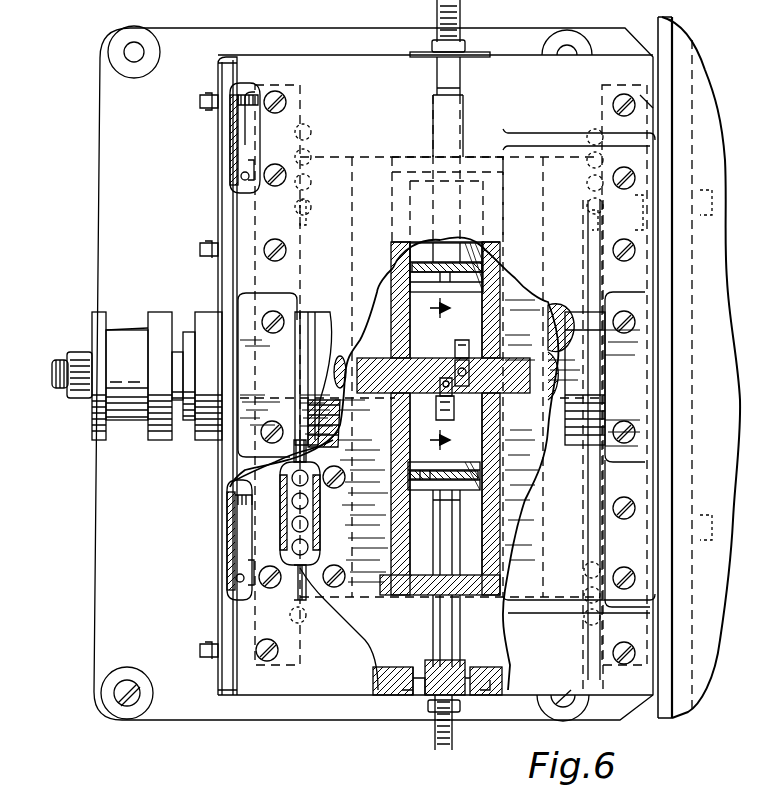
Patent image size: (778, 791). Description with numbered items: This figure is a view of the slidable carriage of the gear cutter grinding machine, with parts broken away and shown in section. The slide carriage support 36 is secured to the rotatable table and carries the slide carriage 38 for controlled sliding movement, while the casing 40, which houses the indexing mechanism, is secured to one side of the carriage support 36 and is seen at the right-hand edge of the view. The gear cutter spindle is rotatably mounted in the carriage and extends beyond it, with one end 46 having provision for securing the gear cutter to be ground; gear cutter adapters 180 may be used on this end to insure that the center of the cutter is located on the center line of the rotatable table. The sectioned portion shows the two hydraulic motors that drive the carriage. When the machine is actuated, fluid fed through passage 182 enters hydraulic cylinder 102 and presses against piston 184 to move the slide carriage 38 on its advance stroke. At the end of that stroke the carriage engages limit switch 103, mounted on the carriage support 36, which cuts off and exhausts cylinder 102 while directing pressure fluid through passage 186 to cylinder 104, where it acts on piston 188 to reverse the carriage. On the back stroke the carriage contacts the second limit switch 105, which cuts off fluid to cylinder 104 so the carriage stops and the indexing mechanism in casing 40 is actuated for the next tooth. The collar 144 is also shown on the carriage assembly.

The slide carriage support 36 is at (107, 504).
The slide carriage 38 is at (396, 672).
The casing 40 is at (660, 720).
The spindle end 46 is at (62, 372).
The hydraulic cylinder 102 is at (475, 322).
The limit switch 103 is at (242, 582).
The hydraulic cylinder 104 is at (478, 428).
The limit switch 105 is at (246, 180).
The collar 144 is at (342, 358).
The gear cutter adapter 180 is at (158, 322).
The passage 182 is at (466, 378).
The piston 184 is at (478, 283).
The passage 186 is at (440, 386).
The piston 188 is at (480, 474).